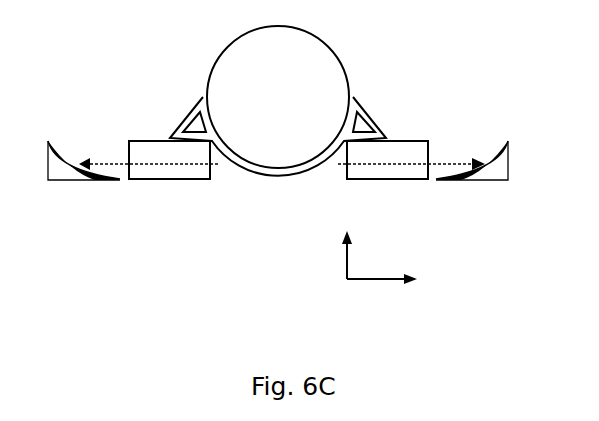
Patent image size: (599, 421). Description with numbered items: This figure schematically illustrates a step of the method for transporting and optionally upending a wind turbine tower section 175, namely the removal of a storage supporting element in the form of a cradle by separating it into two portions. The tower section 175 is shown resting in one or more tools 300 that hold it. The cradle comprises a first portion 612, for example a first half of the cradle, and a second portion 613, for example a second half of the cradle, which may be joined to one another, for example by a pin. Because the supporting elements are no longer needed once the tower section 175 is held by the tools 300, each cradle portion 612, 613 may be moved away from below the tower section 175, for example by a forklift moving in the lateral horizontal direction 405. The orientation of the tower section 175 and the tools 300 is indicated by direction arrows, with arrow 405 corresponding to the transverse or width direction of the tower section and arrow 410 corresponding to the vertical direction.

The wind turbine tower section 175 is at (232, 60).
The tool 300 is at (383, 92).
The first portion 612 is at (61, 175).
The second portion 613 is at (490, 169).
The direction arrow 410 is at (345, 253).
The direction arrow 405 is at (362, 281).